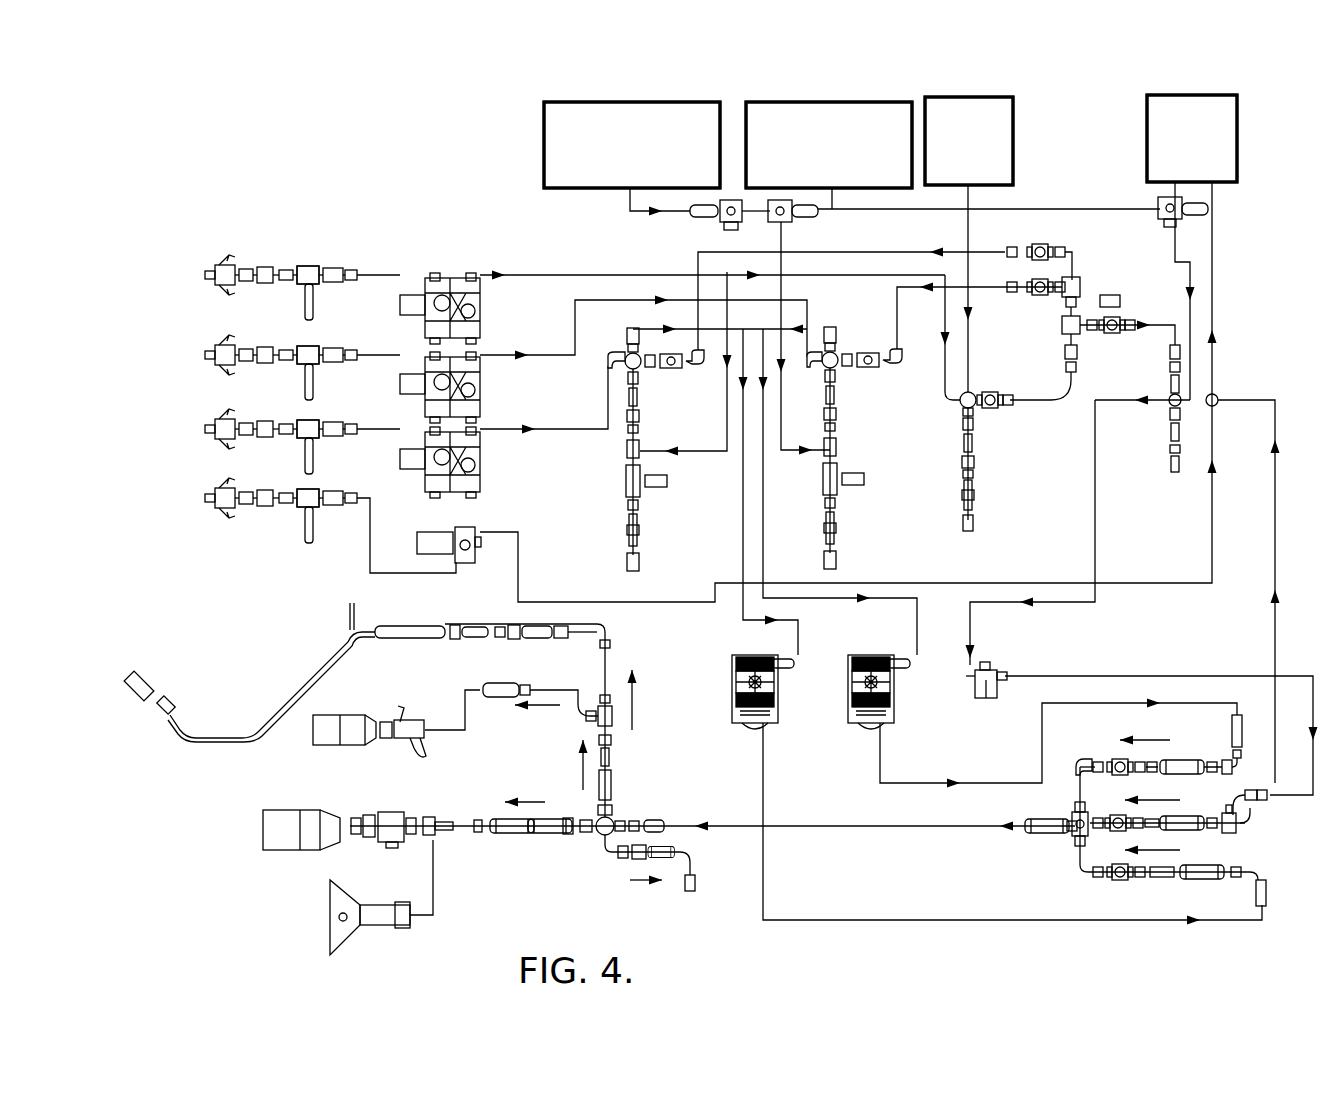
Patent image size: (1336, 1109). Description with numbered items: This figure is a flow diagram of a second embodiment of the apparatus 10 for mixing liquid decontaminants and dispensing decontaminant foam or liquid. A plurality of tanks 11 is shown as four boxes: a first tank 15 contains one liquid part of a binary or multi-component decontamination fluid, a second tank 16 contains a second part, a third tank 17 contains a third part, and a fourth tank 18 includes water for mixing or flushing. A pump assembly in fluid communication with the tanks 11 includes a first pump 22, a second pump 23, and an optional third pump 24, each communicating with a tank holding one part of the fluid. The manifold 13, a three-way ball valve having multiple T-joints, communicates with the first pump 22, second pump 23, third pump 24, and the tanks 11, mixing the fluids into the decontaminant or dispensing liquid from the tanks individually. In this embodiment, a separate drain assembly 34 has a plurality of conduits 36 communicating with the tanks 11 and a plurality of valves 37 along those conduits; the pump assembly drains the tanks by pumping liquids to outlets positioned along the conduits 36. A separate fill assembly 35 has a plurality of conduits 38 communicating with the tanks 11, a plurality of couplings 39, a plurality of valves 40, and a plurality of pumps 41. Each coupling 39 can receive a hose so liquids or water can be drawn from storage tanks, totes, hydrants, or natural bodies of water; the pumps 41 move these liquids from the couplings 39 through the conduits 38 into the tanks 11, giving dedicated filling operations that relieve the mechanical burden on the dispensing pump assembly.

The apparatus 10 is at (270, 232).
The plurality of tanks 11 is at (512, 121).
The manifold 13 is at (1074, 830).
The first tank 15 is at (648, 163).
The second tank 16 is at (848, 163).
The third tank 17 is at (1208, 149).
The fourth tank 18 is at (984, 151).
The first pump 22 is at (732, 700).
The second pump 23 is at (848, 700).
The third pump 24 is at (982, 702).
The drain assembly 34 is at (652, 510).
The fill assembly 35 is at (318, 548).
The conduits 36 is at (640, 412).
The valves 37 is at (628, 354).
The conduits 38 is at (540, 360).
The couplings 39 is at (218, 345).
The valves 40 is at (306, 288).
The pumps 41 is at (458, 272).